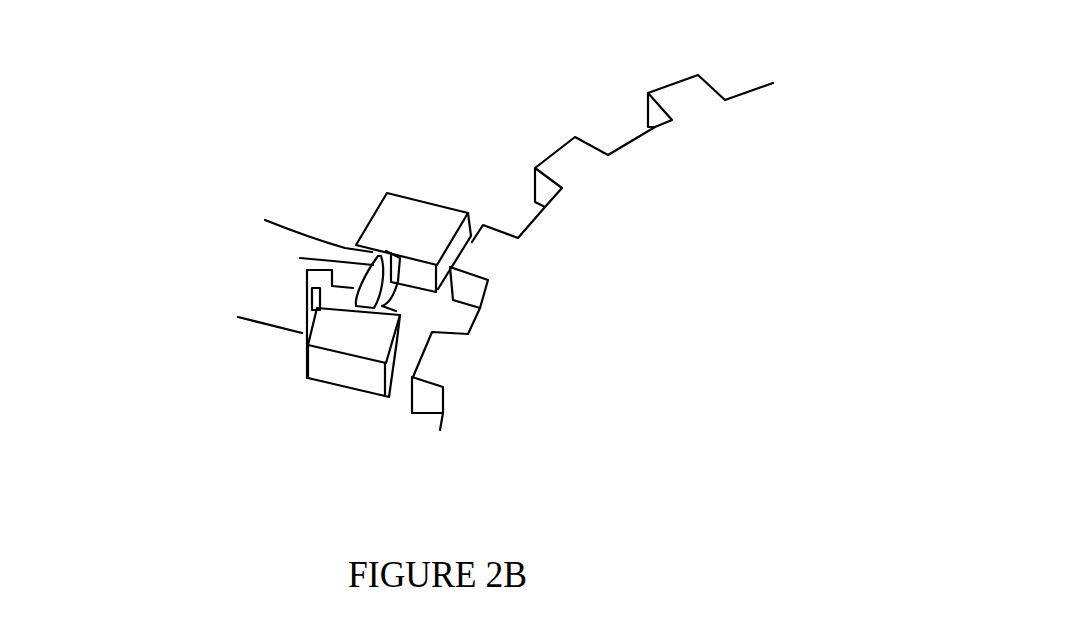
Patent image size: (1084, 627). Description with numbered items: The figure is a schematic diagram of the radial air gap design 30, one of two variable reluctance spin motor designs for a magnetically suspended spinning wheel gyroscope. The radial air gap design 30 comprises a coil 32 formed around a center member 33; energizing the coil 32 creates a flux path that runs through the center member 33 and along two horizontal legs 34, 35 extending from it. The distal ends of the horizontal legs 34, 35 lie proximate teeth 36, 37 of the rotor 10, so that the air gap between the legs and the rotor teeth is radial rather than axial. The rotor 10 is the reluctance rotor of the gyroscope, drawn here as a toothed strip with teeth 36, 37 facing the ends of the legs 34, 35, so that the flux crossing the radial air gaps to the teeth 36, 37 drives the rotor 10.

The rotor 10 is at (592, 252).
The radial air gap design 30 is at (391, 160).
The coil 32 is at (341, 297).
The center member 33 is at (385, 262).
The horizontal leg 34 is at (430, 228).
The horizontal leg 35 is at (356, 381).
The tooth 36 is at (497, 256).
The tooth 37 is at (460, 367).